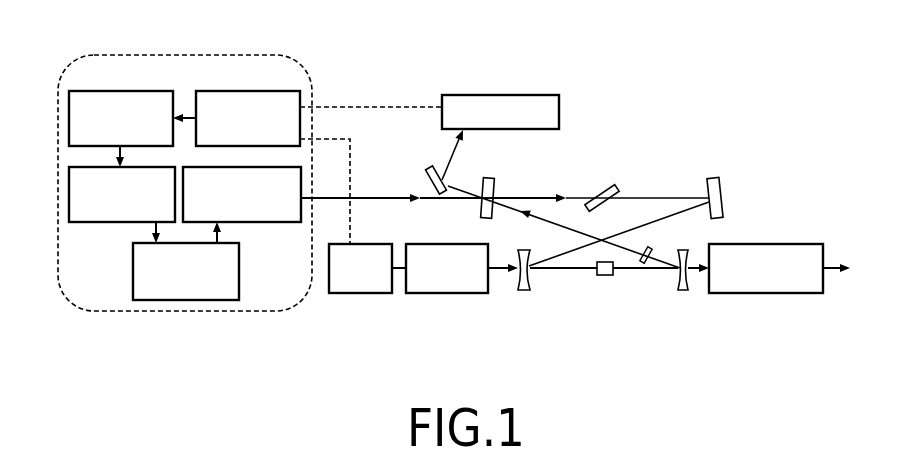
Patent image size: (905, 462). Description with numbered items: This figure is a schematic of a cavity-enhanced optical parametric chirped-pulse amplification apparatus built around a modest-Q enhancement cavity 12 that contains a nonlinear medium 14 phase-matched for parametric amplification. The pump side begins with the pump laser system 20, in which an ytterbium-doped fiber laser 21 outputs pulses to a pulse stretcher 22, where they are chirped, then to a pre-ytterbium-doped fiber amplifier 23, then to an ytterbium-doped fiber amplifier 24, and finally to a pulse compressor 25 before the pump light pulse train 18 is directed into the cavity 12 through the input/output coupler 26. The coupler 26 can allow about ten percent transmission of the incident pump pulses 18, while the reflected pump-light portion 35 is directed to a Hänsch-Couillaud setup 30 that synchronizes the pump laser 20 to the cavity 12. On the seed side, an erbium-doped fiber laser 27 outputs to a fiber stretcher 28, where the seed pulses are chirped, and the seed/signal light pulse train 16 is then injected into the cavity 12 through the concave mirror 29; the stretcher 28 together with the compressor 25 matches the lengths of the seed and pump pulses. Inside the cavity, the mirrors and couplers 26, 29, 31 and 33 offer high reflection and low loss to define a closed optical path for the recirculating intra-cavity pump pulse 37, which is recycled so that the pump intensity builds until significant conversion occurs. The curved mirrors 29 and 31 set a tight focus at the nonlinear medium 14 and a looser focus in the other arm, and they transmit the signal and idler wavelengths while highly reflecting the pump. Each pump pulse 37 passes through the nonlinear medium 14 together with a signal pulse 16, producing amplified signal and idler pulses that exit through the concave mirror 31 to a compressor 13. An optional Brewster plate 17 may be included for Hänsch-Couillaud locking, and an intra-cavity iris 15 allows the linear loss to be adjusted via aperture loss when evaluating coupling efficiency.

The enhancement cavity 12 is at (688, 146).
The compressor 13 is at (754, 278).
The nonlinear medium 14 is at (607, 276).
The intra-cavity iris 15 is at (651, 246).
The seed/signal light pulse train 16 is at (503, 273).
The Brewster plate 17 is at (606, 190).
The pump light pulse train 18 is at (447, 200).
The pump laser system 20 is at (305, 46).
The ytterbium-doped fiber laser 21 is at (236, 128).
The pulse stretcher 22 is at (109, 128).
The pre-ytterbium-doped fiber amplifier 23 is at (110, 204).
The ytterbium-doped fiber amplifier 24 is at (174, 281).
The pulse compressor 25 is at (230, 204).
The input/output coupler 26 is at (493, 178).
The erbium-doped fiber laser 27 is at (348, 278).
The fiber stretcher 28 is at (435, 278).
The concave mirror 29 is at (528, 292).
The Hänsch-Couillaud setup 30 is at (488, 122).
The concave mirror 31 is at (680, 288).
The reflective mirror 33 is at (721, 186).
The reflected pump-light portion 35 is at (452, 183).
The intra-cavity pump pulse 37 is at (556, 252).